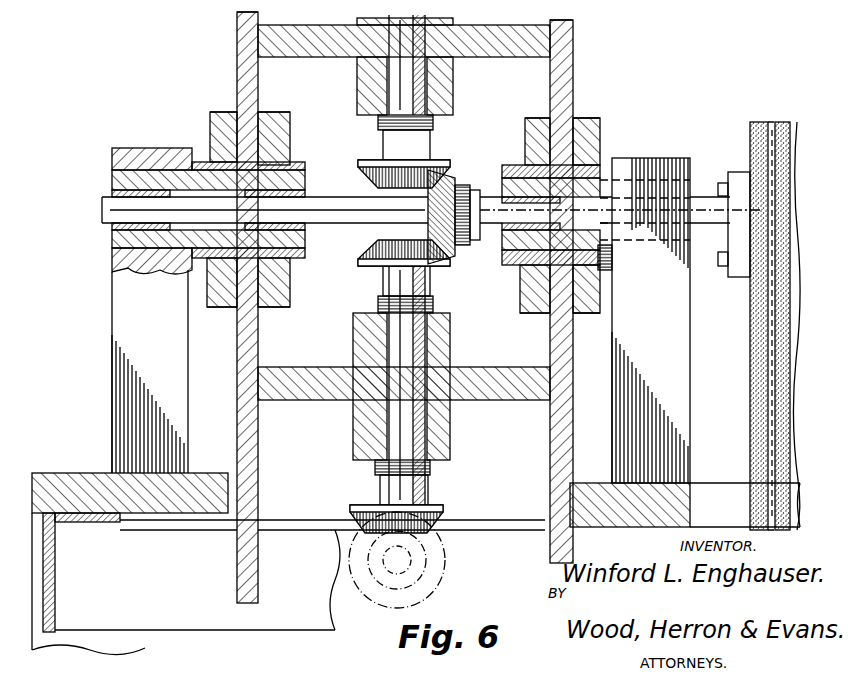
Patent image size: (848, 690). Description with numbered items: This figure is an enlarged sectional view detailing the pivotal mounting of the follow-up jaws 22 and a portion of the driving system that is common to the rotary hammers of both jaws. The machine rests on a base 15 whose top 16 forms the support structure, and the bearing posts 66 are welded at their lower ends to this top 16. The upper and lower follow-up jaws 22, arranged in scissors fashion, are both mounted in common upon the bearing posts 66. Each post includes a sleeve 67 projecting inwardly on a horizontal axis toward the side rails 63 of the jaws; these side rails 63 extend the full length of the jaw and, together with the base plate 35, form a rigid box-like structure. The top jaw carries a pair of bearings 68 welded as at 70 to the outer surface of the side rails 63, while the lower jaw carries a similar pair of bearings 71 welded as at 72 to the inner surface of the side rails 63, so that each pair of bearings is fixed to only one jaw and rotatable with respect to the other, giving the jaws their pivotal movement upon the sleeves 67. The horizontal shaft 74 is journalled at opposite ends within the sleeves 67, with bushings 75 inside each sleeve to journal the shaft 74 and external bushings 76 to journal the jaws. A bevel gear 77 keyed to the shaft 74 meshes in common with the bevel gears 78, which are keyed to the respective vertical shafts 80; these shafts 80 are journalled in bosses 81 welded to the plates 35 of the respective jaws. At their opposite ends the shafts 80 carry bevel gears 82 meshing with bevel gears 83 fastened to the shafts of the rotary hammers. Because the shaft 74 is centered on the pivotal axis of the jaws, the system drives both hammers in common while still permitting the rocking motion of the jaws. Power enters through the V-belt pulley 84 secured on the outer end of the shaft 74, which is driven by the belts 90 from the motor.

The base 15 is at (150, 648).
The top 16 is at (70, 472).
The follow-up jaws 22 is at (578, 55).
The base plate 35 is at (498, 36).
The side rails 63 is at (574, 26).
The bearing posts 66 is at (122, 310).
The sleeve 67 is at (164, 165).
The bearings 68 is at (218, 118).
The weld 70 is at (237, 110).
The bearings 71 is at (282, 294).
The weld 72 is at (260, 308).
The horizontal shaft 74 is at (108, 200).
The bushings 75 is at (300, 186).
The external bushings 76 is at (294, 164).
The bevel gear 77 is at (446, 178).
The bevel gears 78 is at (372, 178).
The vertical shafts 80 is at (418, 28).
The bosses 81 is at (454, 80).
The bevel gears 82 is at (436, 522).
The bevel gears 83 is at (448, 568).
The V-belt pulley 84 is at (748, 148).
The belts 90 is at (788, 378).